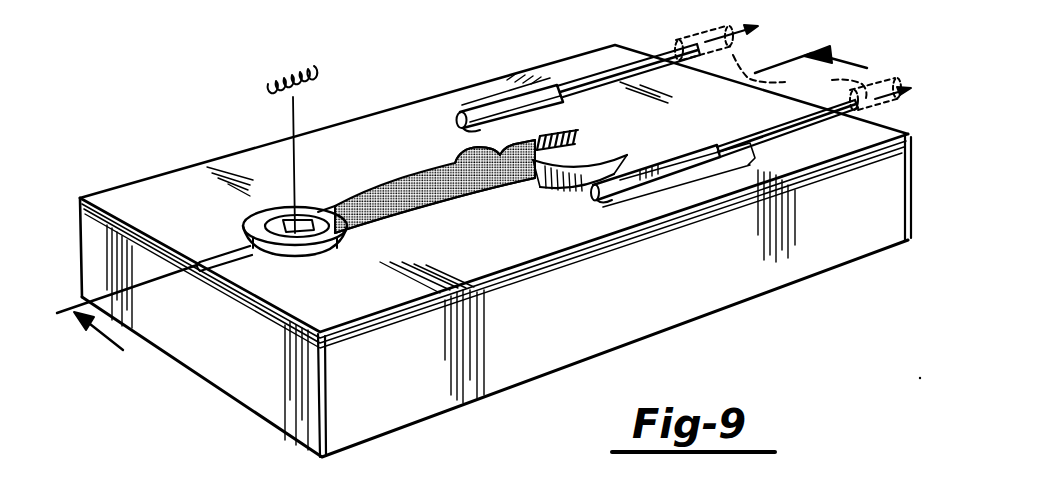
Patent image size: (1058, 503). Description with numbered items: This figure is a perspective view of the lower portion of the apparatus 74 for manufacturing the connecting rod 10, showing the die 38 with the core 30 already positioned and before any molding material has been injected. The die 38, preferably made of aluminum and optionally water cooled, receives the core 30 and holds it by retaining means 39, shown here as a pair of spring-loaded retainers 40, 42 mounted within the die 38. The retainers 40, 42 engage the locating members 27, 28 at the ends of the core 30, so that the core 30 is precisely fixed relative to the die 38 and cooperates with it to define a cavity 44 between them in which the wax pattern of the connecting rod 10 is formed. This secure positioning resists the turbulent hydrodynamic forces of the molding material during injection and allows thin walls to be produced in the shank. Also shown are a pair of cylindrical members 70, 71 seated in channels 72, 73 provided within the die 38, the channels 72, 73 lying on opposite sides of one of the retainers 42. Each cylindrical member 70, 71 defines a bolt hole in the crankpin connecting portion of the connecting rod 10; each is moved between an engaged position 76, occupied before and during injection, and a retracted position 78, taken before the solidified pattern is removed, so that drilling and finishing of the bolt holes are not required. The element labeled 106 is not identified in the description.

The connecting rod 10 is at (477, 214).
The locating member 27 is at (317, 213).
The locating member 28 is at (540, 182).
The core 30 is at (398, 185).
The die 38 is at (197, 183).
The retaining means 39 is at (307, 233).
The retainer 40 is at (267, 77).
The retainer 42 is at (525, 145).
The cavity 44 is at (390, 213).
The cylindrical member 70 is at (502, 110).
The cylindrical member 71 is at (680, 173).
The channel 72 is at (600, 75).
The channel 73 is at (760, 112).
The apparatus 74 is at (122, 170).
The engaged position 76 is at (482, 130).
The retracted position 78 is at (800, 78).
The small tube 106 is at (238, 264).